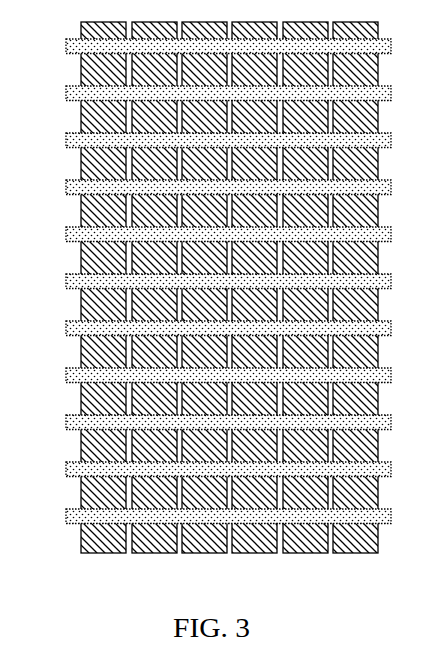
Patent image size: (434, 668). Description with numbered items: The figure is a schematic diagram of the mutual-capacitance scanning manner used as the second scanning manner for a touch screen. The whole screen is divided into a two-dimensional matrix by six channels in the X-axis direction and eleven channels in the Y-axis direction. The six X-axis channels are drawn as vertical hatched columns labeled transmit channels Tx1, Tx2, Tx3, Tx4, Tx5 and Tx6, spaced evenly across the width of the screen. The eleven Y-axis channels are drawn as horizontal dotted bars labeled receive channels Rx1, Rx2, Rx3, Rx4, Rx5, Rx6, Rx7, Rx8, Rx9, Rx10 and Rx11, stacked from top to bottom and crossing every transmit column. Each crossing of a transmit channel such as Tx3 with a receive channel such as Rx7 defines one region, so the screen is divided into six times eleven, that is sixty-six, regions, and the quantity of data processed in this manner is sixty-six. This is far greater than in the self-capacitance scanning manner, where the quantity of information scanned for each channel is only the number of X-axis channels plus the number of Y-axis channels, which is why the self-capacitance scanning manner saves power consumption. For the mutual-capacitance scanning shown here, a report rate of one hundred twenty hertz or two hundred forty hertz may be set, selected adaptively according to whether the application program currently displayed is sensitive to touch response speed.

The transmit channel Tx1 is at (128, 582).
The transmit channel Tx2 is at (182, 582).
The transmit channel Tx3 is at (233, 582).
The transmit channel Tx4 is at (284, 582).
The transmit channel Tx5 is at (334, 582).
The transmit channel Tx6 is at (384, 582).
The receive channel Rx1 is at (65, 50).
The receive channel Rx2 is at (65, 97).
The receive channel Rx3 is at (65, 144).
The receive channel Rx4 is at (65, 191).
The receive channel Rx5 is at (65, 238).
The receive channel Rx6 is at (65, 285).
The receive channel Rx7 is at (65, 332).
The receive channel Rx8 is at (65, 379).
The receive channel Rx9 is at (65, 426).
The receive channel Rx10 is at (73, 473).
The receive channel Rx11 is at (73, 520).